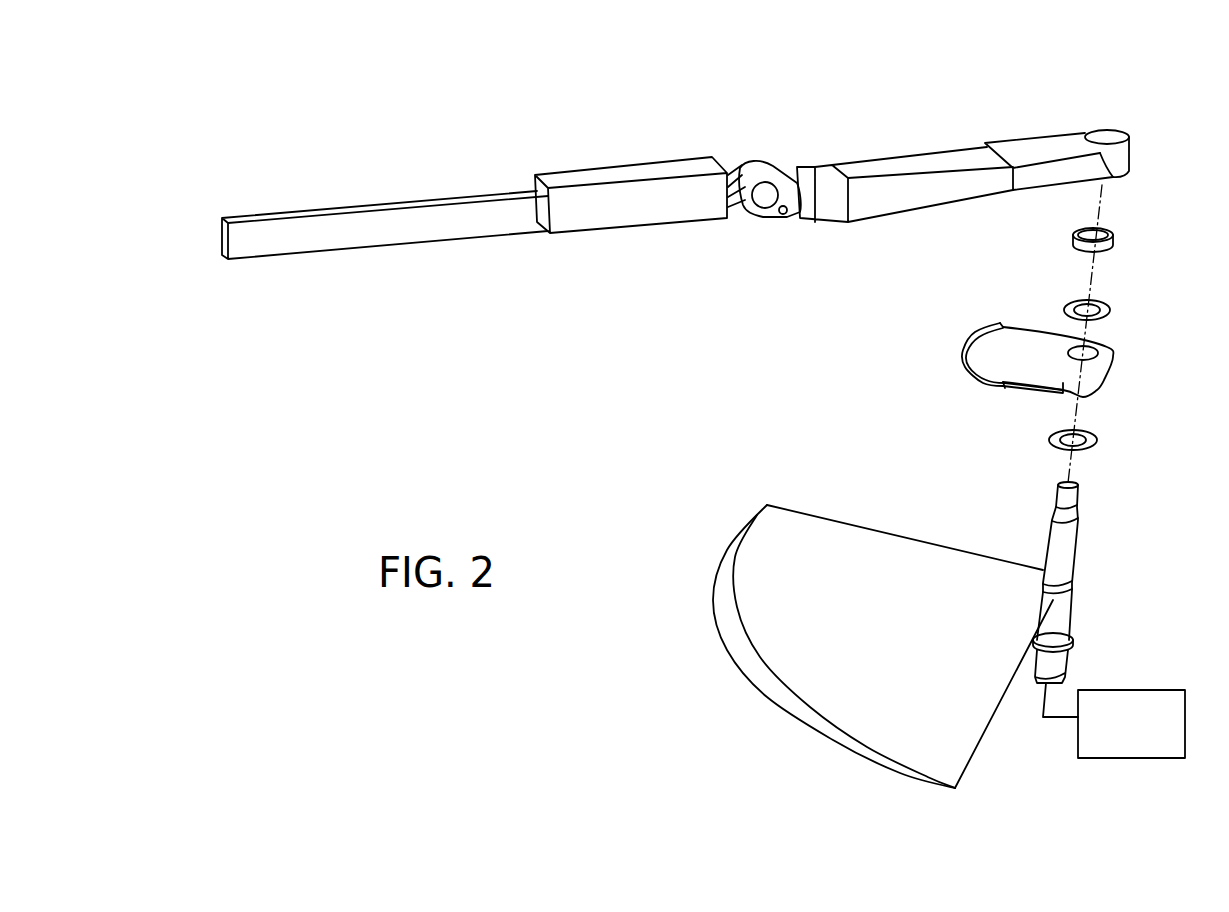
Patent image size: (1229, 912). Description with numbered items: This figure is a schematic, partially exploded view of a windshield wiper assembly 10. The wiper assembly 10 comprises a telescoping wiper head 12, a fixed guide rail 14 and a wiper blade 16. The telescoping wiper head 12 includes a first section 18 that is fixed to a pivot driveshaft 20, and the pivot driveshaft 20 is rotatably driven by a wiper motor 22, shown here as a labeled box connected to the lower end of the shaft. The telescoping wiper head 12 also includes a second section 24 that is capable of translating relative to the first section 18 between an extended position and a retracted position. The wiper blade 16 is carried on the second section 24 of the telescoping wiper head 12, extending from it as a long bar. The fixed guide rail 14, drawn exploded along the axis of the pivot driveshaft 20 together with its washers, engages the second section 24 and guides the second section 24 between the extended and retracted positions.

The windshield wiper assembly 10 is at (518, 104).
The telescoping wiper head 12 is at (997, 102).
The fixed guide rail 14 is at (980, 383).
The wiper blade 16 is at (327, 223).
The first section 18 is at (1057, 147).
The pivot driveshaft 20 is at (1068, 552).
The wiper motor 22 is at (1138, 690).
The second section 24 is at (880, 198).